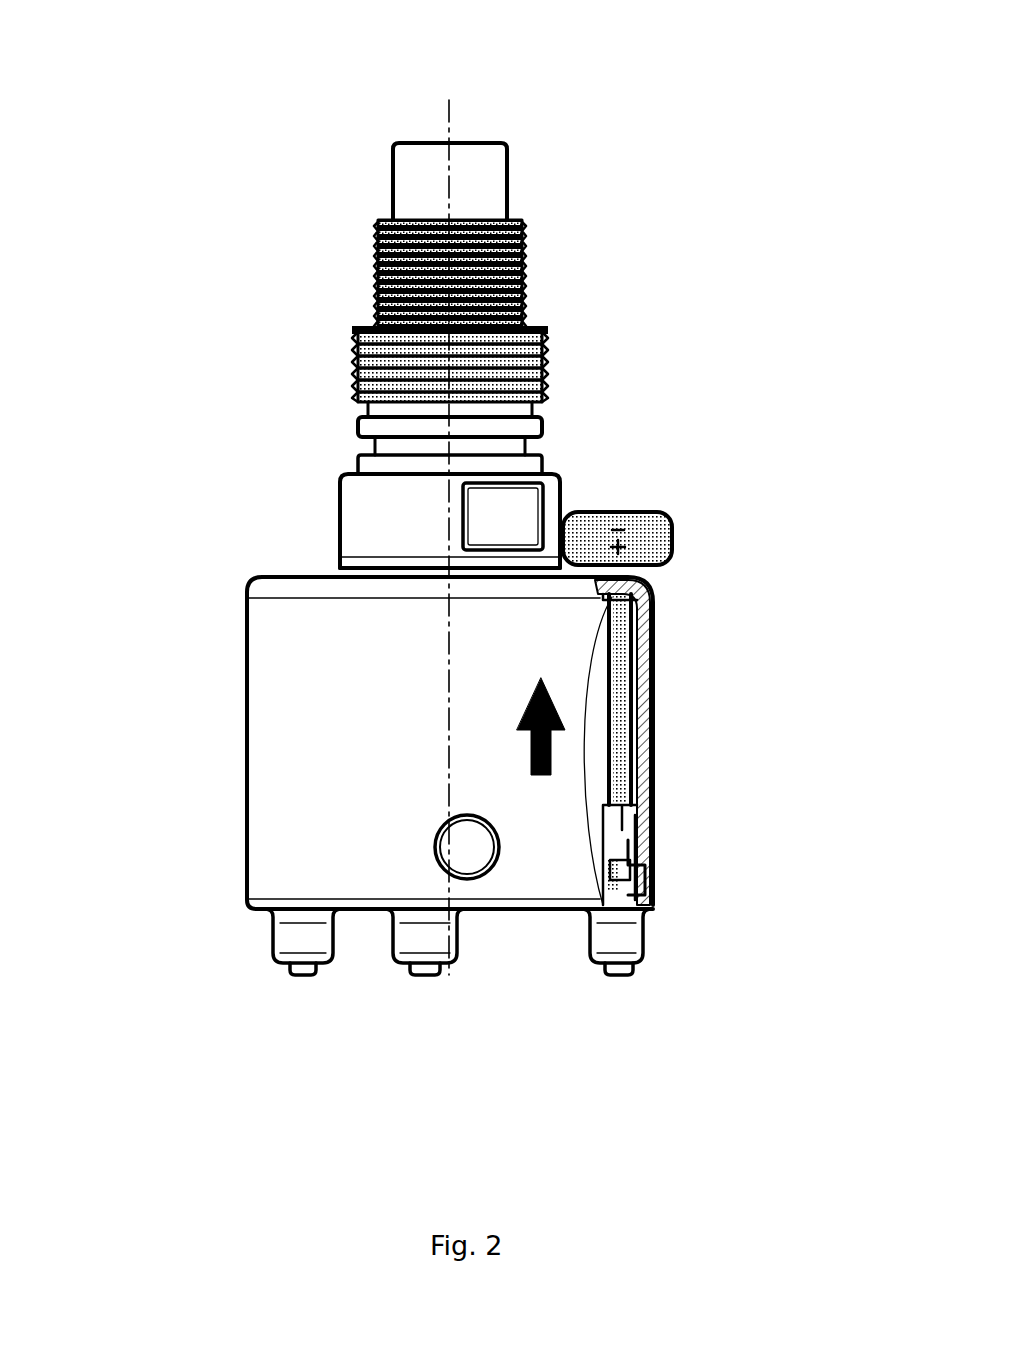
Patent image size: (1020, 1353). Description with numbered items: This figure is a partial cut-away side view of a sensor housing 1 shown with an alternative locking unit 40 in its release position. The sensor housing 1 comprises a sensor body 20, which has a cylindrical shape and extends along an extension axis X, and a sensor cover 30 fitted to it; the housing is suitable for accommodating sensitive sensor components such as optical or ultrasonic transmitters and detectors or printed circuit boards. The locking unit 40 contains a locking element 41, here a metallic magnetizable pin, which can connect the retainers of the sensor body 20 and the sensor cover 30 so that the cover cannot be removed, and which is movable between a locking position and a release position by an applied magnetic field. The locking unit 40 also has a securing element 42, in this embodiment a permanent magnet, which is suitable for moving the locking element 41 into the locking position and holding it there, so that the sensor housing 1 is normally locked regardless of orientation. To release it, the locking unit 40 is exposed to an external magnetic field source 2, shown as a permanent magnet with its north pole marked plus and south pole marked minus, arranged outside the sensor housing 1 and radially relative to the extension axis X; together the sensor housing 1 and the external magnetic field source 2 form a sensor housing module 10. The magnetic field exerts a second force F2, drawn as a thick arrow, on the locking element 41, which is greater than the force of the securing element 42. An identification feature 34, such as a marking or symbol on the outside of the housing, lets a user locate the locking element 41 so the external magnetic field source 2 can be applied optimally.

The sensor housing 1 is at (155, 214).
The extension axis X is at (450, 140).
The sensor housing module 10 is at (725, 282).
The external magnetic field source 2 is at (603, 476).
The sensor body 20 is at (238, 589).
The identification feature 34 is at (422, 840).
The second force F2 is at (553, 703).
The locking unit 40 is at (742, 864).
The locking element 41 is at (617, 762).
The securing element 42 is at (613, 900).
The sensor cover 30 is at (366, 994).